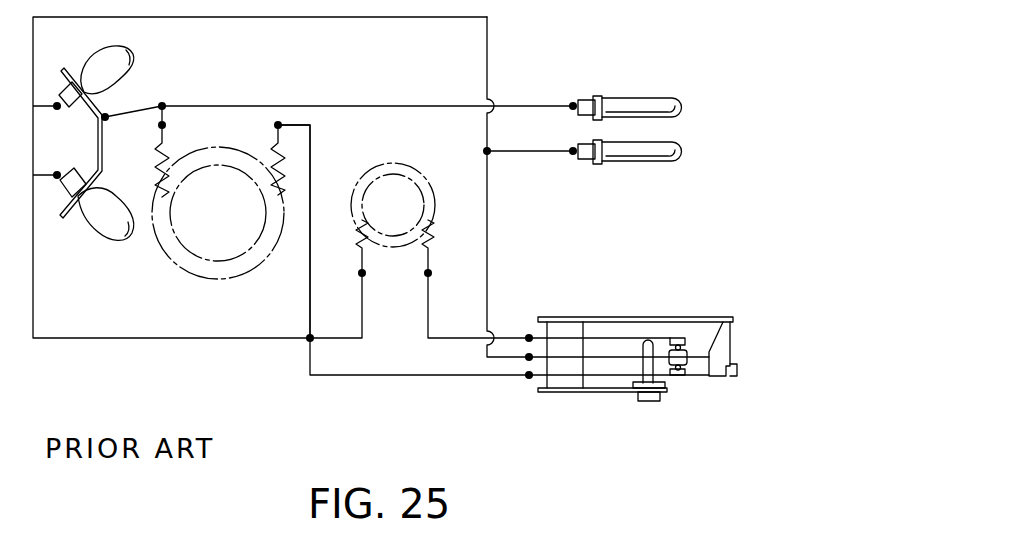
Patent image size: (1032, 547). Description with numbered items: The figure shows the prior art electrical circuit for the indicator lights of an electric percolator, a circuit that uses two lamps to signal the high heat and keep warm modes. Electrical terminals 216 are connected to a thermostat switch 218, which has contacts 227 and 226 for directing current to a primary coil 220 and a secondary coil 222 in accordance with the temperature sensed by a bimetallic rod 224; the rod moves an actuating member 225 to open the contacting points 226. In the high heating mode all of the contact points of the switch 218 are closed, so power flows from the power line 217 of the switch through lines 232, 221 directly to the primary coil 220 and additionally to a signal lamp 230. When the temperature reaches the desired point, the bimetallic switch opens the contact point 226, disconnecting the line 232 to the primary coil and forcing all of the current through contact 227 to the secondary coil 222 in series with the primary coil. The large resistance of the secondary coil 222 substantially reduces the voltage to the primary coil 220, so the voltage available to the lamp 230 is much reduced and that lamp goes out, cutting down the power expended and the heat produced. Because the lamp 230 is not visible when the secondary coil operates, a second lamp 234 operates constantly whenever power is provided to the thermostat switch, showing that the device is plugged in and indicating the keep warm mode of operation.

The electrical terminals 216 is at (667, 162).
The power line 217 is at (487, 275).
The thermostat switch 218 is at (665, 347).
The primary coil 220 is at (173, 263).
The line 221 is at (310, 250).
The secondary coil 222 is at (423, 174).
The bimetallic rod 224 is at (568, 318).
The actuating member 225 is at (765, 370).
The contact 226 is at (687, 368).
The contact 227 is at (693, 345).
The signal lamp 230 is at (97, 232).
The line 232 is at (390, 375).
The lamp 234 is at (130, 67).